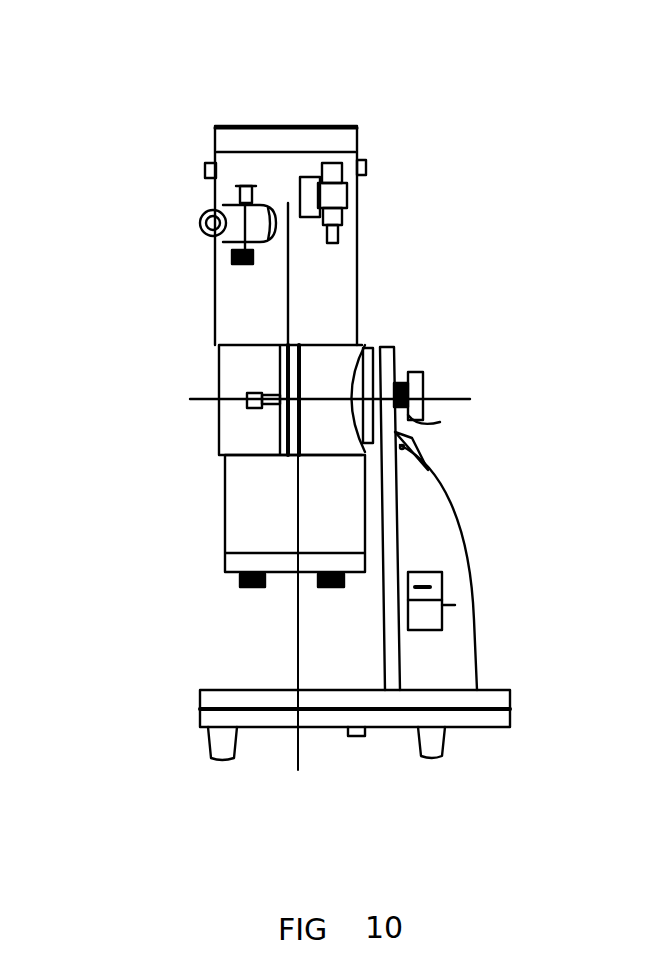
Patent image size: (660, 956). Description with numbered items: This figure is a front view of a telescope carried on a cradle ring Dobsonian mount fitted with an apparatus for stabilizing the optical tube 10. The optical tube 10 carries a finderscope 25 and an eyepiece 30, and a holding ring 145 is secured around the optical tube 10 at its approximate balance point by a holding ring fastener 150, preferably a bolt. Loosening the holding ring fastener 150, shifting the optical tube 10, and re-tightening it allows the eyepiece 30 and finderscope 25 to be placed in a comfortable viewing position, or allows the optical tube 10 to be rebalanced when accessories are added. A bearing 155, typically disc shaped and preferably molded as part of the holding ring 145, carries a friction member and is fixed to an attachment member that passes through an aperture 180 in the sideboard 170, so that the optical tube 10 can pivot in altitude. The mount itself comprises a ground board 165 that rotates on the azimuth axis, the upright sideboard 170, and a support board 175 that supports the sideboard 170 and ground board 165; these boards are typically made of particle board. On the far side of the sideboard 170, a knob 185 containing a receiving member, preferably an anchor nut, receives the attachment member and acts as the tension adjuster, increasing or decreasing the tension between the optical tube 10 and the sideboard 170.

The optical tube 10 is at (318, 295).
The finderscope 25 is at (348, 180).
The eyepiece 30 is at (200, 218).
The holding ring 145 is at (328, 365).
The holding ring fastener 150 is at (247, 400).
The bearing 155 is at (422, 460).
The ground board 165 is at (513, 703).
The sideboard 170 is at (393, 365).
The support board 175 is at (430, 558).
The aperture 180 is at (418, 425).
The knob 185 is at (422, 385).